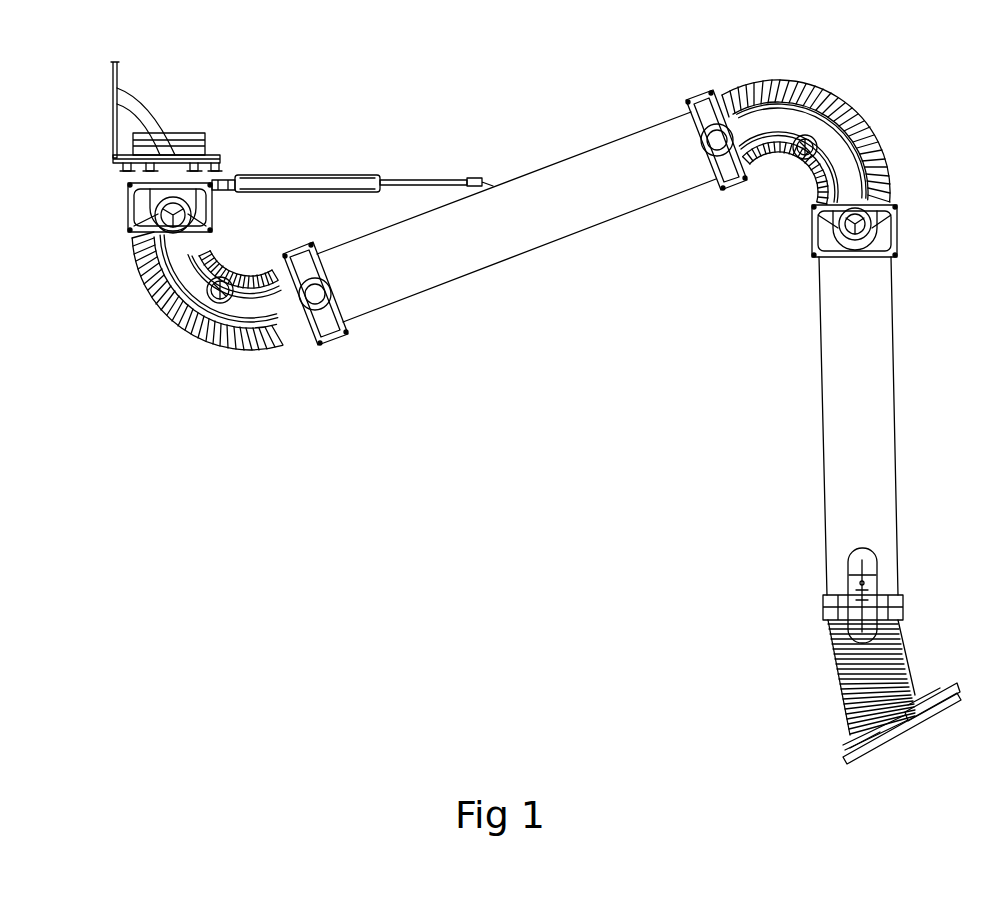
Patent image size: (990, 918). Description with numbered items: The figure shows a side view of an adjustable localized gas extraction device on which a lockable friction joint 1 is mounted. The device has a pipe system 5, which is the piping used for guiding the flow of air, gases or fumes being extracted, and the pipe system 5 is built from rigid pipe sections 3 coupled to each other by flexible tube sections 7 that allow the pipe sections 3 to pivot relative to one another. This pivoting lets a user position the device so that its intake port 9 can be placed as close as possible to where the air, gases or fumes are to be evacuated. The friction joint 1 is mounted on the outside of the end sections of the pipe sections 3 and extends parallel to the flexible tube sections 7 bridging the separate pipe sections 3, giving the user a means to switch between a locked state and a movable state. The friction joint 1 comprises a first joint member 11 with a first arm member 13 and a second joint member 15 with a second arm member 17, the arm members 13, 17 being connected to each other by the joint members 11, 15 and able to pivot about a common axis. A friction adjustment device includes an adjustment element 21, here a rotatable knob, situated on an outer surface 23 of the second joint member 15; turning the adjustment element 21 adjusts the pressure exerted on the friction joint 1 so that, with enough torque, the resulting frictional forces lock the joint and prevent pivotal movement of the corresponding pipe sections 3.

The lockable friction joint 1 is at (208, 330).
The pipe section 3 is at (482, 263).
The pipe system 5 is at (542, 72).
The flexible tube section 7 is at (140, 243).
The intake port 9 is at (903, 738).
The first joint member 11 is at (228, 337).
The first arm member 13 is at (253, 313).
The second joint member 15 is at (223, 273).
The second arm member 17 is at (190, 262).
The adjustment element 21 is at (217, 307).
The outer surface 23 is at (200, 288).